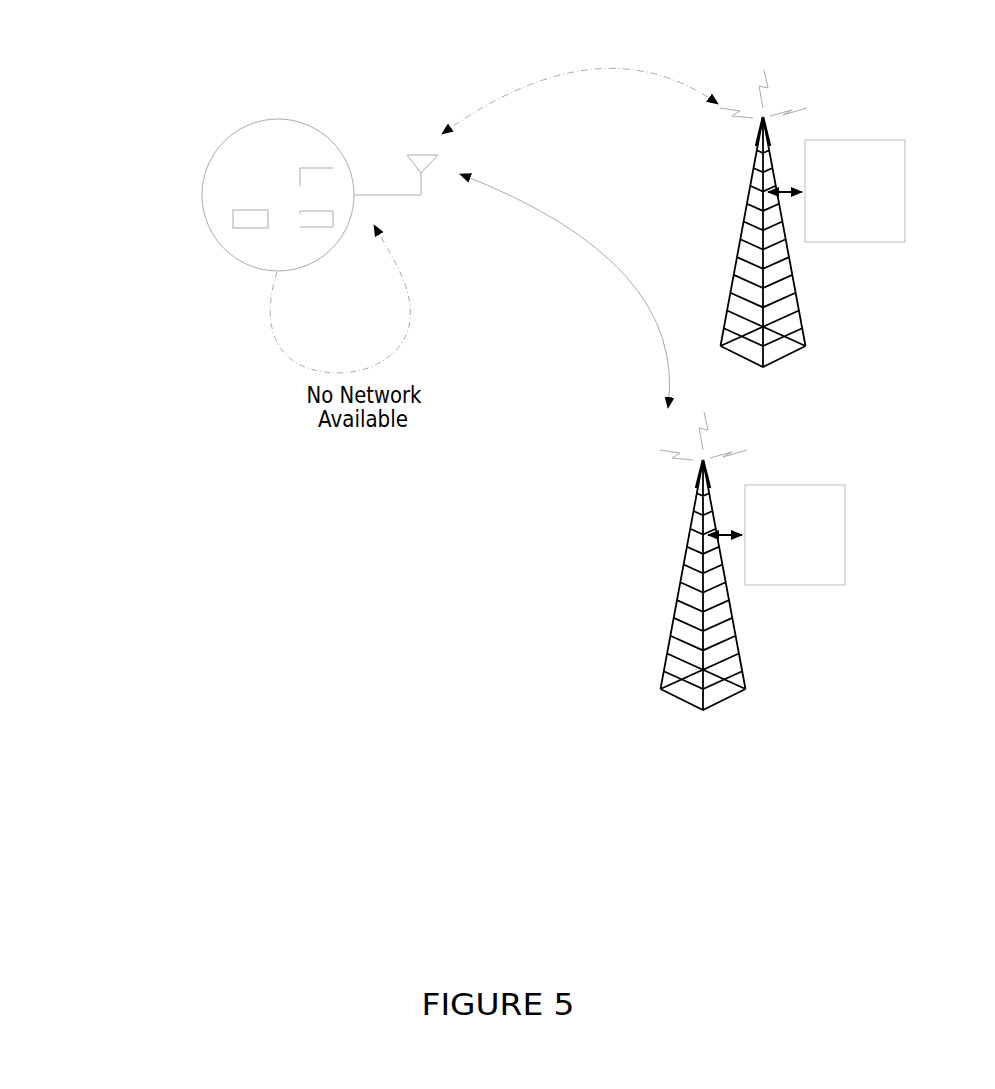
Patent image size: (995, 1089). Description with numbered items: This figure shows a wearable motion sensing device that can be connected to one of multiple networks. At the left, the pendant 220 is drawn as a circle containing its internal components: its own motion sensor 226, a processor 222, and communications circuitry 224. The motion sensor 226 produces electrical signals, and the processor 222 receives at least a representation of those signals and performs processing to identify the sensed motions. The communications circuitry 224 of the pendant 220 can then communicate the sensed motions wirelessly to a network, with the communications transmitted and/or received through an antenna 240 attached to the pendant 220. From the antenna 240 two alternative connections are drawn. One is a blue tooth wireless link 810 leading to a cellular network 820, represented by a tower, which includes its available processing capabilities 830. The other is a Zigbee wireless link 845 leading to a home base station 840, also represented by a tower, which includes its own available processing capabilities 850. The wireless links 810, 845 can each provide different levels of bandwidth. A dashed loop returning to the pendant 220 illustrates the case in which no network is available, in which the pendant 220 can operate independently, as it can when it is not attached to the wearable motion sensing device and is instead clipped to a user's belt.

The pendant 220 is at (201, 195).
The processor 222 is at (298, 223).
The communications circuitry 224 is at (250, 207).
The motion sensor 226 is at (317, 165).
The antenna 240 is at (421, 151).
The blue tooth wireless link 810 is at (580, 71).
The cellular network 820 is at (763, 252).
The processing capabilities 830 is at (836, 191).
The home base station 840 is at (707, 604).
The Zigbee wireless link 845 is at (565, 291).
The processing capabilities 850 is at (776, 535).